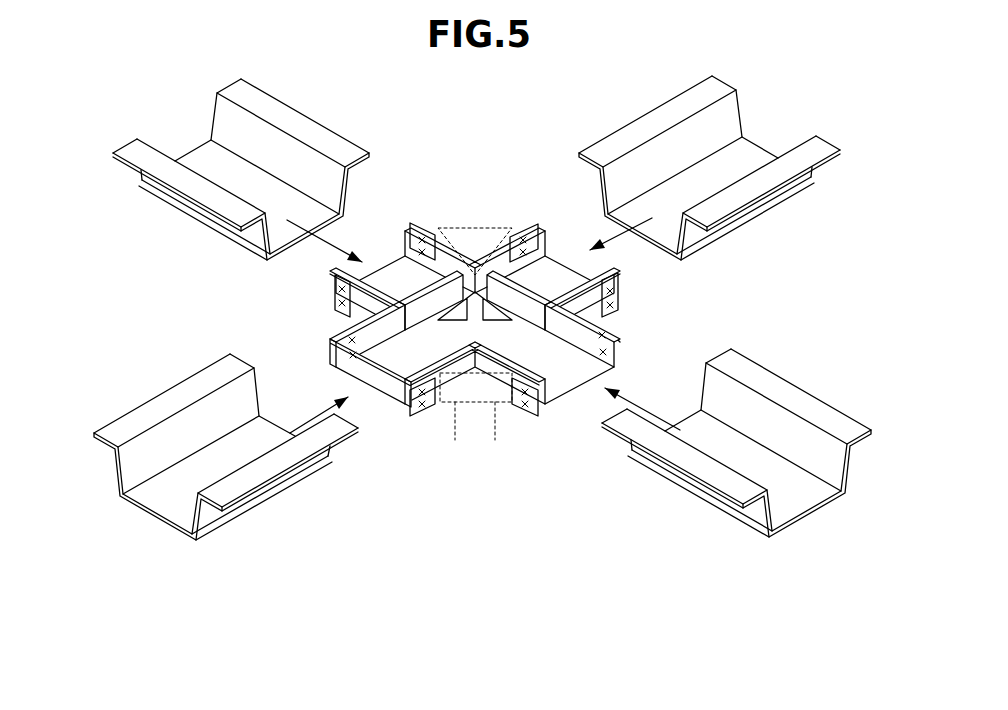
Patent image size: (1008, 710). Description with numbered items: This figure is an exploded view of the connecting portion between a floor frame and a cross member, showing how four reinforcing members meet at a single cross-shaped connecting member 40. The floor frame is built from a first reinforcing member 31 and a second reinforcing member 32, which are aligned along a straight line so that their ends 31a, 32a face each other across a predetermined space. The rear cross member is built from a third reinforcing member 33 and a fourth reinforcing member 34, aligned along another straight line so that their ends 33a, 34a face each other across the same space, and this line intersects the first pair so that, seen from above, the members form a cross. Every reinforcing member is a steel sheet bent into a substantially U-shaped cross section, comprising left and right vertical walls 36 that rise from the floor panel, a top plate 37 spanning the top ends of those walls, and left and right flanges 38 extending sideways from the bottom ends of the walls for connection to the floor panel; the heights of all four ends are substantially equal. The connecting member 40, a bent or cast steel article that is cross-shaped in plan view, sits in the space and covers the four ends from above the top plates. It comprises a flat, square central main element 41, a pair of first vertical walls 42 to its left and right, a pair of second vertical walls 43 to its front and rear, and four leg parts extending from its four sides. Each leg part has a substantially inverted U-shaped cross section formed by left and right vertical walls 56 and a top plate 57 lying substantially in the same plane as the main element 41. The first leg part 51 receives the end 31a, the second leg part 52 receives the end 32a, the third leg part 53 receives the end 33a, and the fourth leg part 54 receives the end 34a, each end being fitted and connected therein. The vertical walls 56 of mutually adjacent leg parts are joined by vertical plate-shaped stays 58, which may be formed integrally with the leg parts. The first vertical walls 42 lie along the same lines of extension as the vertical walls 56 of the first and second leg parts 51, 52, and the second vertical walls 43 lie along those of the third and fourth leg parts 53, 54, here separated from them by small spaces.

The first reinforcing member 31 is at (848, 405).
The end of first reinforcing member 31a is at (708, 432).
The second reinforcing member 32 is at (265, 88).
The end of second reinforcing member 32a is at (303, 207).
The third reinforcing member 33 is at (653, 101).
The end of third reinforcing member 33a is at (693, 203).
The fourth reinforcing member 34 is at (113, 413).
The end of fourth reinforcing member 34a is at (253, 427).
The vertical wall 36 is at (227, 122).
The top plate 37 is at (203, 163).
The flange 38 is at (237, 93).
The connecting member 40 is at (435, 548).
The main element 41 is at (478, 335).
The first vertical wall 42 is at (480, 255).
The second vertical wall 43 is at (455, 292).
The first leg part 51 is at (592, 407).
The second leg part 52 is at (338, 287).
The third leg part 53 is at (572, 236).
The fourth leg part 54 is at (373, 407).
The vertical wall 56 is at (410, 222).
The top plate 57 is at (400, 258).
The stay 58 is at (456, 238).